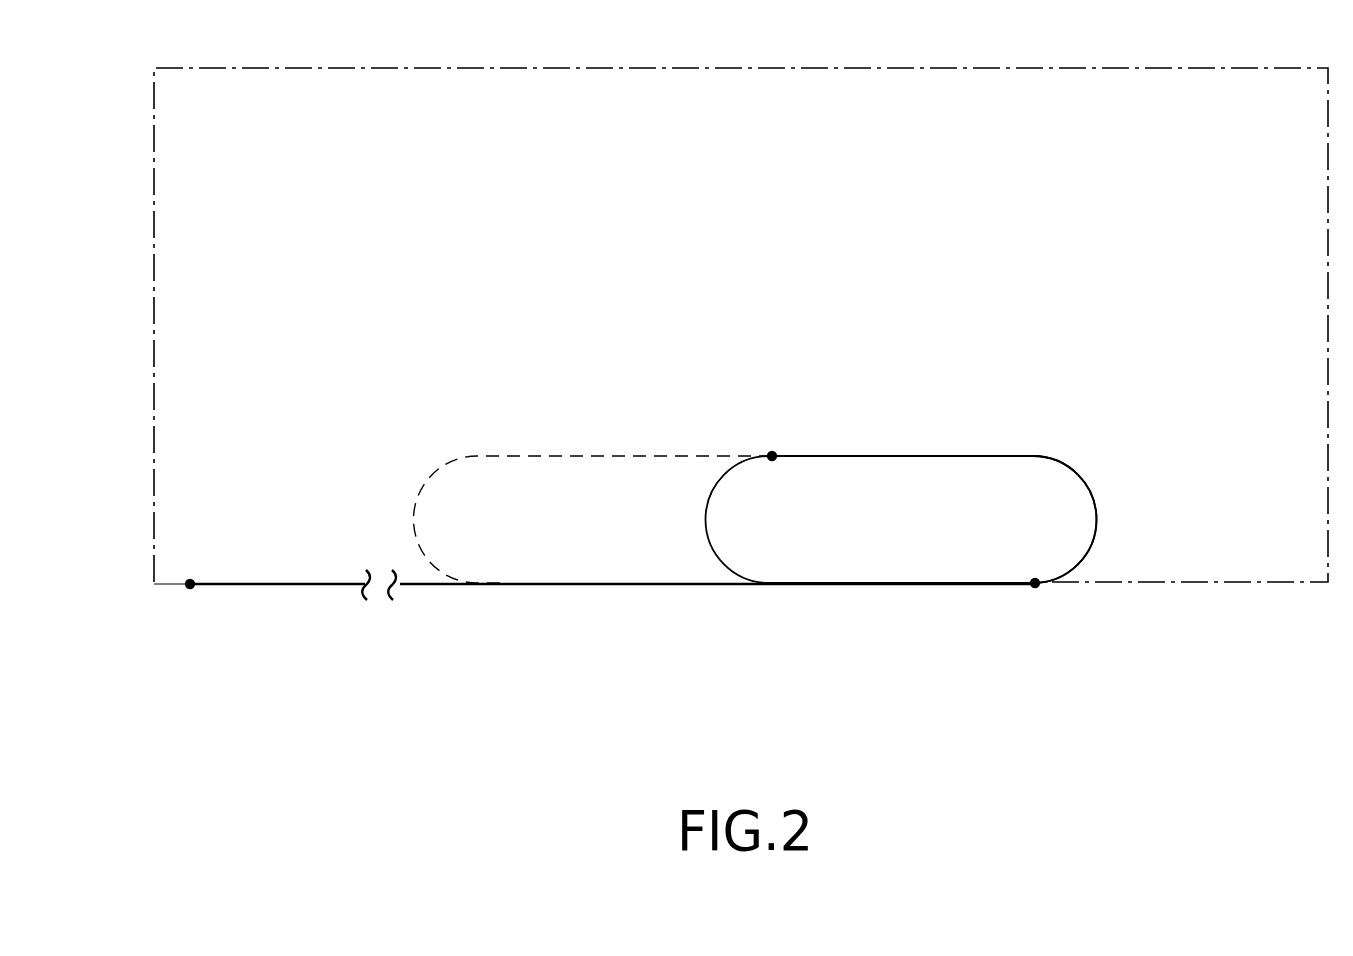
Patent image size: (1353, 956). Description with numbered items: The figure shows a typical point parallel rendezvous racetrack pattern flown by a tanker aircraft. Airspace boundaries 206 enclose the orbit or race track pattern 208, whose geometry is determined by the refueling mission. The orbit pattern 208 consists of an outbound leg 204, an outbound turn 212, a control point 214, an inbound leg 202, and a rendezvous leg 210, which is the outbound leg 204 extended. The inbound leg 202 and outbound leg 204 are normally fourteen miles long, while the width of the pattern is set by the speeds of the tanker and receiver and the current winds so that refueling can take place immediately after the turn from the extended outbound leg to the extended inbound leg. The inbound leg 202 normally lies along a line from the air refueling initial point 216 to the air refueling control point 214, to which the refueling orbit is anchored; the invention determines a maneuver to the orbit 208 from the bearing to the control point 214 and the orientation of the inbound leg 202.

The inbound leg 202 is at (947, 584).
The outbound leg 204 is at (932, 456).
The airspace boundaries 206 is at (1327, 216).
The orbit pattern 208 is at (1117, 436).
The rendezvous leg 210 is at (560, 456).
The outbound turn 212 is at (1097, 520).
The control point 214 is at (1040, 586).
The air refueling initial point 216 is at (190, 589).